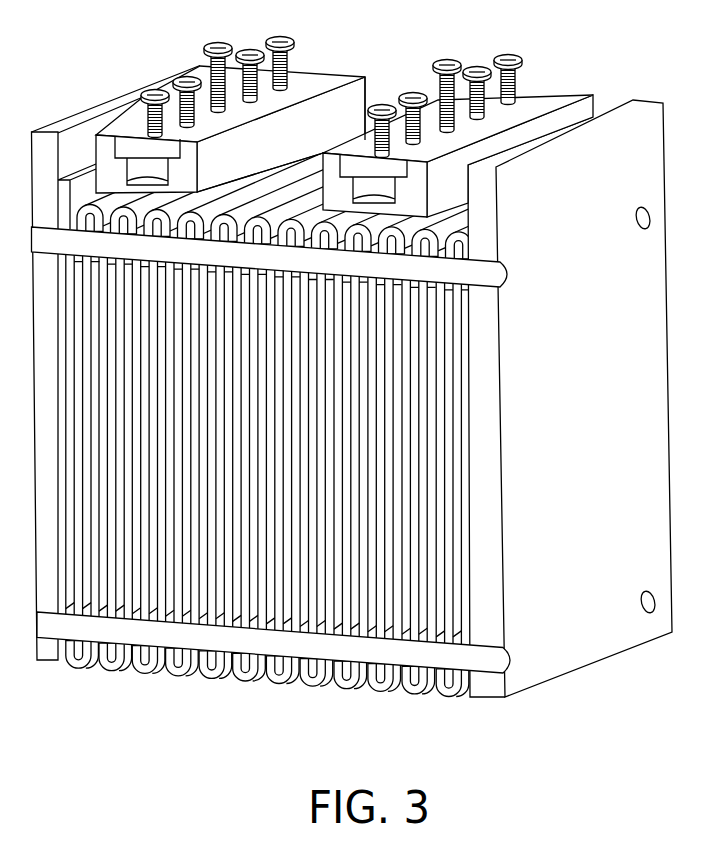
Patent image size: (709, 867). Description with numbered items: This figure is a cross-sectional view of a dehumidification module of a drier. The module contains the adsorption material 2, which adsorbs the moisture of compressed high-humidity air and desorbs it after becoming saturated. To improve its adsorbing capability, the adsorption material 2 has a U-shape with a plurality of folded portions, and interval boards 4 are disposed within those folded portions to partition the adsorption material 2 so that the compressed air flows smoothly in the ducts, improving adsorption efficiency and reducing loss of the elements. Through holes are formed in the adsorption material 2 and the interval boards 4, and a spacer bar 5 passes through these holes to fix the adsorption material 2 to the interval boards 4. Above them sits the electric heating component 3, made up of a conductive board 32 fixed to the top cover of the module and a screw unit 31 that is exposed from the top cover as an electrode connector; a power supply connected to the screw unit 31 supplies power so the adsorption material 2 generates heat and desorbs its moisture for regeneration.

The adsorption material 2 is at (455, 694).
The electric heating component 3 is at (377, 112).
The screw unit 31 is at (524, 62).
The conductive board 32 is at (536, 98).
The interval board 4 is at (453, 674).
The spacer bar 5 is at (508, 655).